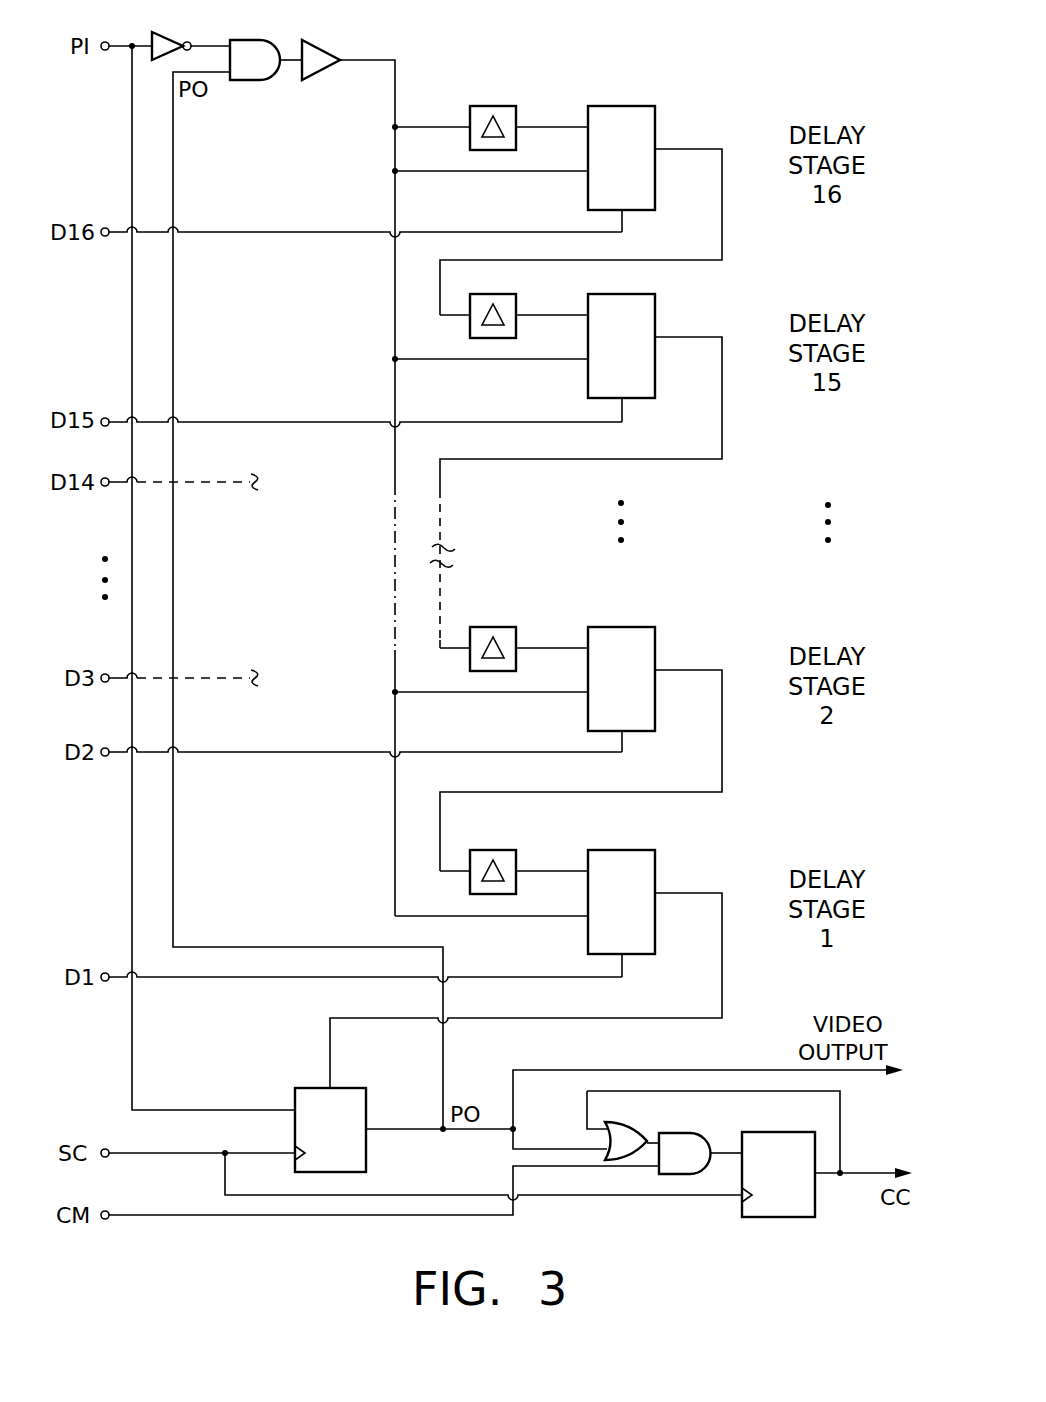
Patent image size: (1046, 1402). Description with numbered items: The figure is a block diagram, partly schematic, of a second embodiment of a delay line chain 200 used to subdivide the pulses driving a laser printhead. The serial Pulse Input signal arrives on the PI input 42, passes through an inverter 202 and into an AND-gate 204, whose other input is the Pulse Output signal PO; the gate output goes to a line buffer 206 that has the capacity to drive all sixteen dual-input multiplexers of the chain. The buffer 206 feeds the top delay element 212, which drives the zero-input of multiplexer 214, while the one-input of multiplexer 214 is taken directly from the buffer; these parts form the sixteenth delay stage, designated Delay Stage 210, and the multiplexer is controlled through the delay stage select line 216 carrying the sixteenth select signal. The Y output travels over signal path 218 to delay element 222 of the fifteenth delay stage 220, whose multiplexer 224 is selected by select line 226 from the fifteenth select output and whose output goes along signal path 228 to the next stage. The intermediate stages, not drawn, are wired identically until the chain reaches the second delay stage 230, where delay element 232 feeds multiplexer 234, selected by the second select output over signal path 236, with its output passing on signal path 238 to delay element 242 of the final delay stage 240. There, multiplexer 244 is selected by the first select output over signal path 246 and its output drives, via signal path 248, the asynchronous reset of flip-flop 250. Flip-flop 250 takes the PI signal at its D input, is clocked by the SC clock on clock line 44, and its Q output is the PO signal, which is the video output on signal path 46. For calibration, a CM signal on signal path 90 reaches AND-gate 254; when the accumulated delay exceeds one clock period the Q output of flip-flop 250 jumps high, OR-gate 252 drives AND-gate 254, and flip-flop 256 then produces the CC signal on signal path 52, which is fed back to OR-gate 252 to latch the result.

The PI input 42 is at (118, 44).
The inverter 202 is at (168, 38).
The AND-gate 204 is at (257, 43).
The line buffer 206 is at (313, 70).
The delay line chain 200 is at (512, 48).
The Delay Stage 16 210 is at (755, 78).
The delay element 212 is at (490, 106).
The multiplexer 214 is at (642, 120).
The delay stage select line 216 is at (515, 232).
The signal path 218 is at (722, 205).
The delay stage 220 is at (755, 295).
The delay element 222 is at (493, 294).
The multiplexer 224 is at (625, 300).
The select line 226 is at (540, 422).
The signal path 228 is at (722, 404).
The delay stage 230 is at (755, 628).
The delay element 232 is at (488, 627).
The multiplexer 234 is at (620, 630).
The signal path 236 is at (520, 752).
The signal path 238 is at (722, 752).
The final delay stage 240 is at (755, 860).
The delay element 242 is at (490, 850).
The multiplexer 244 is at (632, 852).
The signal path 246 is at (543, 977).
The signal path 248 is at (722, 988).
The flip-flop 250 is at (366, 1160).
The clock line 44 is at (137, 1153).
The signal path 90 is at (160, 1215).
The video output signal path 46 is at (765, 1068).
The OR-gate 252 is at (625, 1133).
The AND-gate 254 is at (700, 1145).
The flip-flop 256 is at (785, 1210).
The signal path 52 is at (855, 1170).